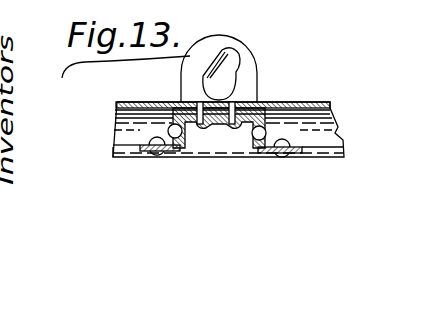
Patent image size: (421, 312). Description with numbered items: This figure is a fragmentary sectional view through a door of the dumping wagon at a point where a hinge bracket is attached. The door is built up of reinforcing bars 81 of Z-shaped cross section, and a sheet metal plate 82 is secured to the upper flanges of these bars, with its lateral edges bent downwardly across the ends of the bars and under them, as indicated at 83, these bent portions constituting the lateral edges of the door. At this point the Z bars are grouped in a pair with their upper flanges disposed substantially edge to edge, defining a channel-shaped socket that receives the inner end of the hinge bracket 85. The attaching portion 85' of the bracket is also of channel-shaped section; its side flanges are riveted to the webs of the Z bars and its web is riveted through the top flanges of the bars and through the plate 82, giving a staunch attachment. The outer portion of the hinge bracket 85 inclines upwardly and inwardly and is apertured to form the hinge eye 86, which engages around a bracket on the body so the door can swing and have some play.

The bars 81 is at (172, 150).
The sheet metal plate 82 is at (115, 103).
The downwardly bent portions of the plate 83 is at (113, 153).
The hinge bracket 85 is at (192, 68).
The attaching portion 85' is at (217, 146).
The hinge eye 86 is at (226, 70).